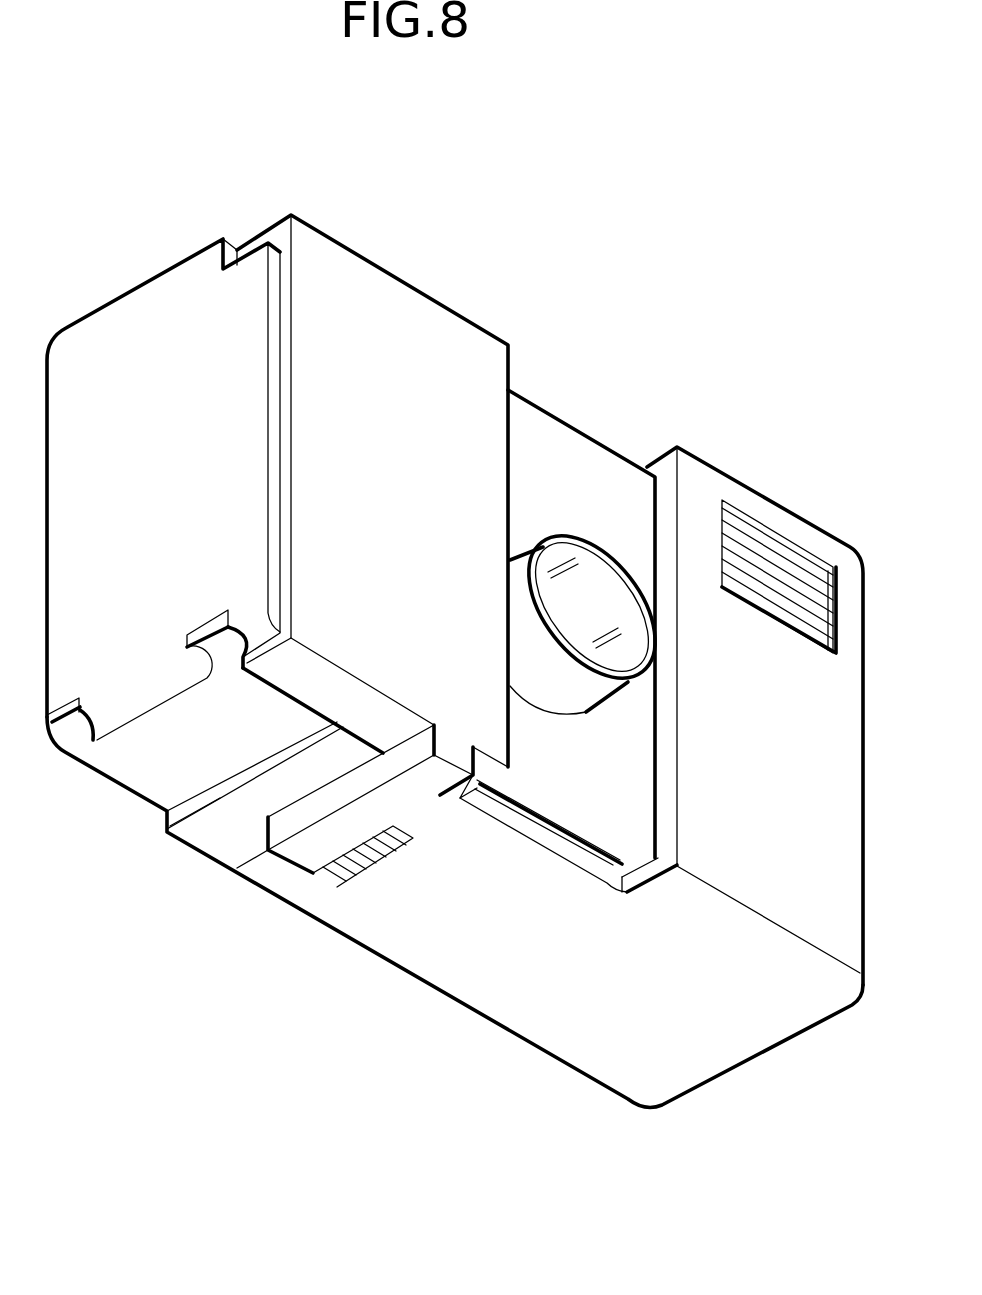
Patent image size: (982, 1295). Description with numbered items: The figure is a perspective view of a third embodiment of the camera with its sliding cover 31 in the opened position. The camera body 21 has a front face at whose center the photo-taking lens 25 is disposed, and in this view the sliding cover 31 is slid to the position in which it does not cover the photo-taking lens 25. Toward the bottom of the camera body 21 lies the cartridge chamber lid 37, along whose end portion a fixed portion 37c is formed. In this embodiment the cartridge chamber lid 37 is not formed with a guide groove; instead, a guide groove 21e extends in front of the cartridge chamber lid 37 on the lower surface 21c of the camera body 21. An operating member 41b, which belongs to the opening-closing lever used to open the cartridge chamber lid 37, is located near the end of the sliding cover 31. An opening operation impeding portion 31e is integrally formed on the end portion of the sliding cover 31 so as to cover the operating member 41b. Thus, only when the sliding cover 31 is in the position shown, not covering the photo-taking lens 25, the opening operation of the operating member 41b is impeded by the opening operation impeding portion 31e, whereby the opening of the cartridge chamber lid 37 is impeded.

The sliding cover 31 is at (413, 325).
The photo-taking lens 25 is at (597, 532).
The camera body 21 is at (741, 478).
The lower surface 21c is at (700, 1068).
The guide groove 21e is at (567, 825).
The cartridge chamber lid 37 is at (143, 762).
The fixed portion 37c is at (223, 830).
The opening operation impeding portion 31e is at (310, 852).
The operating member 41b is at (328, 875).